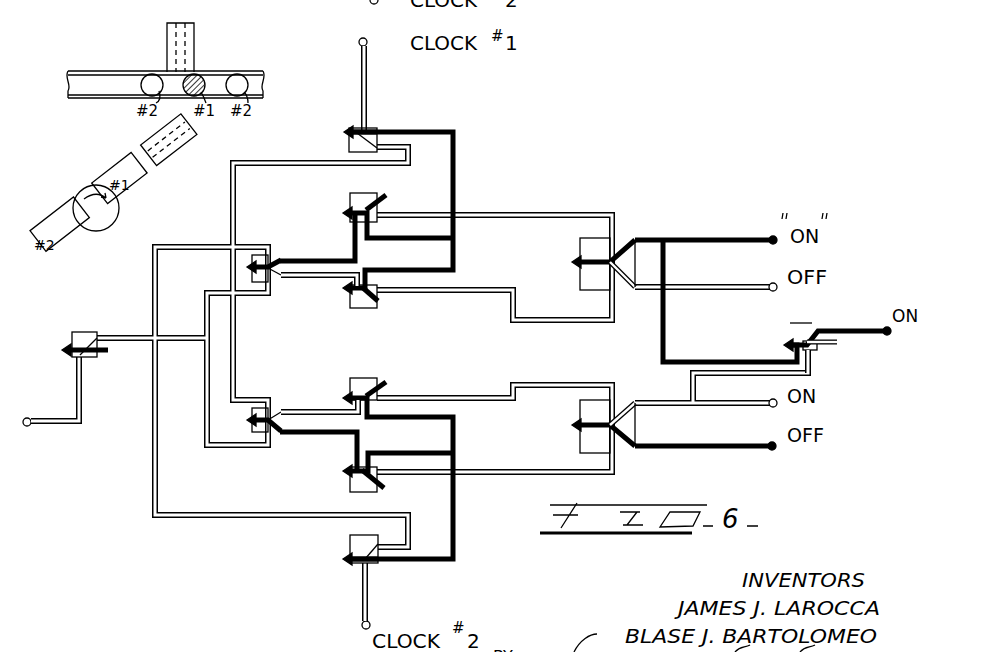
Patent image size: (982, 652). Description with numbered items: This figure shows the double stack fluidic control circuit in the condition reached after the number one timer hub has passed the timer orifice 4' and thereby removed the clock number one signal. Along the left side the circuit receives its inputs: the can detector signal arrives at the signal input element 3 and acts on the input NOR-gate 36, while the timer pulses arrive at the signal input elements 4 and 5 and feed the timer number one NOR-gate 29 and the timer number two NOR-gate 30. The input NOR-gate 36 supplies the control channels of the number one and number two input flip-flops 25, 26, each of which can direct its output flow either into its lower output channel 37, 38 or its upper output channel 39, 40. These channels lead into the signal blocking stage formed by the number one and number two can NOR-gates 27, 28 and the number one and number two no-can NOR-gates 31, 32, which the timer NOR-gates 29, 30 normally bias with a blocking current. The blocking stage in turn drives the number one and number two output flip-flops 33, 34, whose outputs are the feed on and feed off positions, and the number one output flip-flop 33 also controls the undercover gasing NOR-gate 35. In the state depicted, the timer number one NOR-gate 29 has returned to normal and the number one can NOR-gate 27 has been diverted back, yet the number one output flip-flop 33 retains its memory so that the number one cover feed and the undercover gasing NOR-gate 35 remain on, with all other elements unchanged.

The signal input element 3 is at (196, 37).
The signal input element 4 is at (374, 74).
The timer orifice 4' is at (169, 149).
The signal input element 5 is at (378, 611).
The No. 1 input flip-flop 25 is at (272, 254).
The No. 2 input flip-flop 26 is at (272, 409).
The No. 1 can NOR-gate 27 is at (351, 304).
The No. 2 can NOR-gate 28 is at (358, 493).
The timer No. 1 NOR-gate 29 is at (369, 128).
The timer No. 2 NOR-gate 30 is at (350, 536).
The No. 1 no-can NOR-gate 31 is at (350, 195).
The No. 2 no-can NOR-gate 32 is at (365, 378).
The No. 1 output flip-flop 33 is at (622, 237).
The No. 2 output flip-flop 34 is at (627, 400).
The undercover gasing NOR-gate 35 is at (810, 324).
The input NOR-gate 36 is at (78, 332).
The lower output channel 37 is at (330, 275).
The lower output channel 38 is at (336, 432).
The upper output channel 39 is at (332, 256).
The upper output channel 40 is at (318, 409).